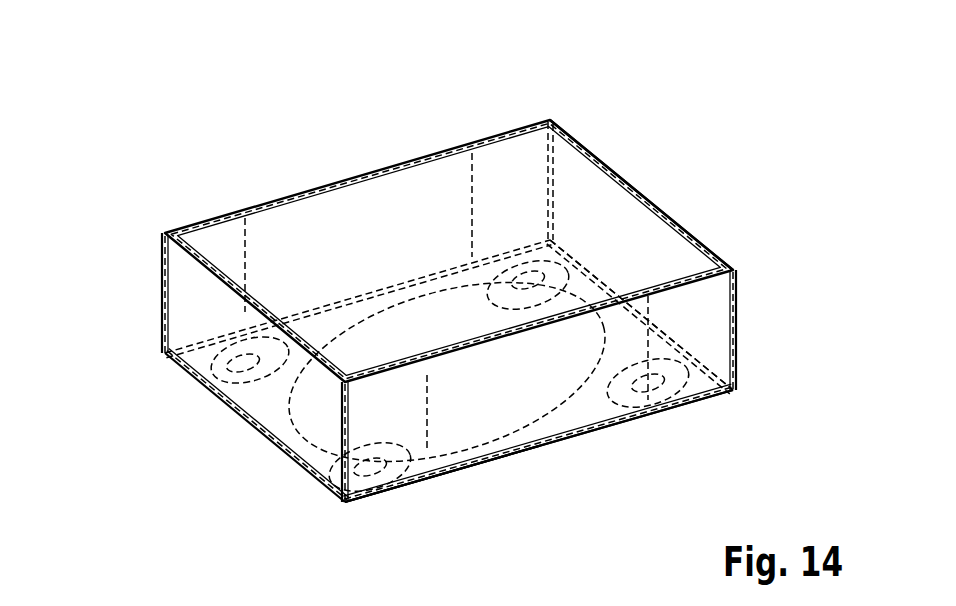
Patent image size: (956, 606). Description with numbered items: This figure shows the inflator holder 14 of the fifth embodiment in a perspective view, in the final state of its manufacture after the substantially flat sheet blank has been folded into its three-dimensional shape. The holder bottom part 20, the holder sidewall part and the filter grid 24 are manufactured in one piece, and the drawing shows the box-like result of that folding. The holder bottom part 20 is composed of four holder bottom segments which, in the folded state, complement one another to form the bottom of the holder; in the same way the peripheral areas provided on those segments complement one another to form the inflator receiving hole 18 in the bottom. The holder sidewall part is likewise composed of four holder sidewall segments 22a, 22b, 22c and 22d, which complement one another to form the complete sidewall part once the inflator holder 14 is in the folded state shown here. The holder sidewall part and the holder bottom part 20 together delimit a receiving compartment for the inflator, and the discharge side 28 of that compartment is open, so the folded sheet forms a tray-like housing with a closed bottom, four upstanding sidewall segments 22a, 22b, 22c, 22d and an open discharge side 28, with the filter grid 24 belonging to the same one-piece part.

The inflator holder 14 is at (570, 83).
The inflator receiving hole 18 is at (541, 471).
The holder bottom part 20 is at (452, 495).
The holder sidewall segment 22a is at (280, 410).
The holder sidewall segment 22b is at (533, 395).
The holder sidewall segment 22c is at (748, 331).
The holder sidewall segment 22d is at (147, 296).
The filter grid 24 is at (620, 218).
The discharge side 28 is at (620, 218).